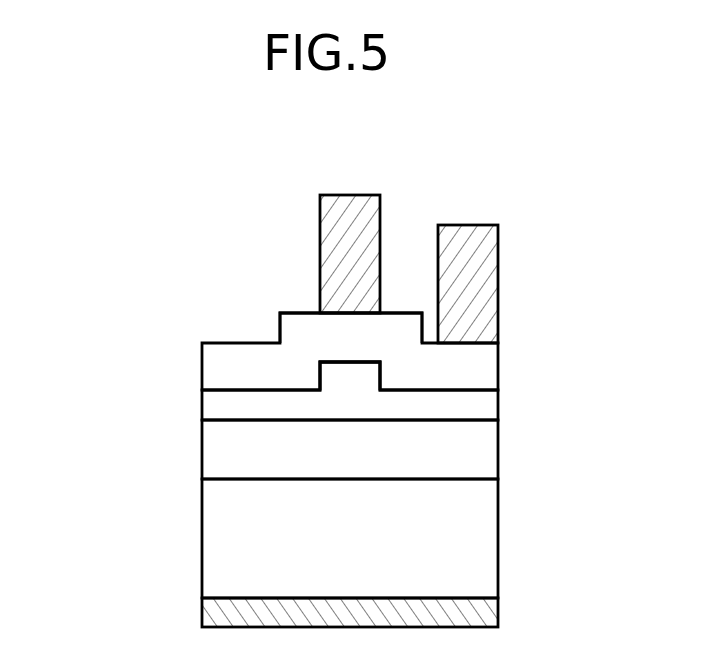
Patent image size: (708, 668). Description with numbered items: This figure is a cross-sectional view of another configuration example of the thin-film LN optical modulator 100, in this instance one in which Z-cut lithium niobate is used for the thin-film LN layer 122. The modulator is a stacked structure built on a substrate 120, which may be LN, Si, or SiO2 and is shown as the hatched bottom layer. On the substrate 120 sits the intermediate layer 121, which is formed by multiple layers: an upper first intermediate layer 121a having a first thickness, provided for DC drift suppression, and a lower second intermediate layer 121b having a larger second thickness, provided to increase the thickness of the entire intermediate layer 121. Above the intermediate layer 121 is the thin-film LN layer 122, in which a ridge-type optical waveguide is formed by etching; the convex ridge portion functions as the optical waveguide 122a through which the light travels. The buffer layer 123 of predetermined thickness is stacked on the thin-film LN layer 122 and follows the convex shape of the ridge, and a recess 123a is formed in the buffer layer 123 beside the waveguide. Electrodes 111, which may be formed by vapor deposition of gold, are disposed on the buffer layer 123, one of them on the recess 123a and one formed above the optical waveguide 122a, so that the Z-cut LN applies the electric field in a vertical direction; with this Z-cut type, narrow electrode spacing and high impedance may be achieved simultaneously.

The thin-film LN optical modulator 100 is at (573, 174).
The electrode 111 is at (330, 218).
The substrate 120 is at (490, 617).
The intermediate layer 121 is at (254, 509).
The first intermediate layer 121a is at (213, 447).
The second intermediate layer 121b is at (295, 538).
The thin-film LN layer 122 is at (490, 407).
The optical waveguide 122a is at (365, 373).
The buffer layer 123 is at (213, 367).
The recess 123a is at (238, 343).